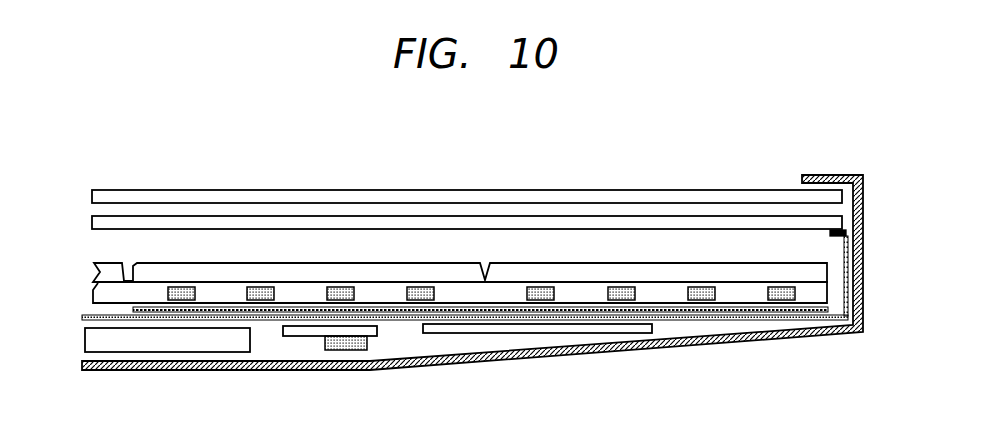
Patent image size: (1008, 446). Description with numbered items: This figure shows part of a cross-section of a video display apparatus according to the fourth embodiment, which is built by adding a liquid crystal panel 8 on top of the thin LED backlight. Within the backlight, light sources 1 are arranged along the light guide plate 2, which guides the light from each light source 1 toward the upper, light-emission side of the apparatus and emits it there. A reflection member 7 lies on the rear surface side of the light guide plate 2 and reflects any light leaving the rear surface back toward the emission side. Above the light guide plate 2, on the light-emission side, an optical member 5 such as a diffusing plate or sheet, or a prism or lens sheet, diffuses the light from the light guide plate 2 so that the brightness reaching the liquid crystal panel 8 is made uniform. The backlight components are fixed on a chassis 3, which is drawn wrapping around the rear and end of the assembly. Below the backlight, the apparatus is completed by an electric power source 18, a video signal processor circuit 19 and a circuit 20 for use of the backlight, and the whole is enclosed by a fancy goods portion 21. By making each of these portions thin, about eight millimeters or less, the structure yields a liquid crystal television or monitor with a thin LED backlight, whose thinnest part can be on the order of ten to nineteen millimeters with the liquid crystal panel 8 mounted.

The light source 1 is at (545, 298).
The light guide plate 2 is at (496, 288).
The chassis 3 is at (778, 322).
The optical member 5 is at (752, 221).
The reflection member 7 is at (703, 312).
The liquid crystal panel 8 is at (662, 193).
The electric power source 18 is at (124, 345).
The video signal processor circuit 19 is at (452, 330).
The circuit for use of the backlight 20 is at (311, 333).
The fancy goods portion 21 is at (638, 352).